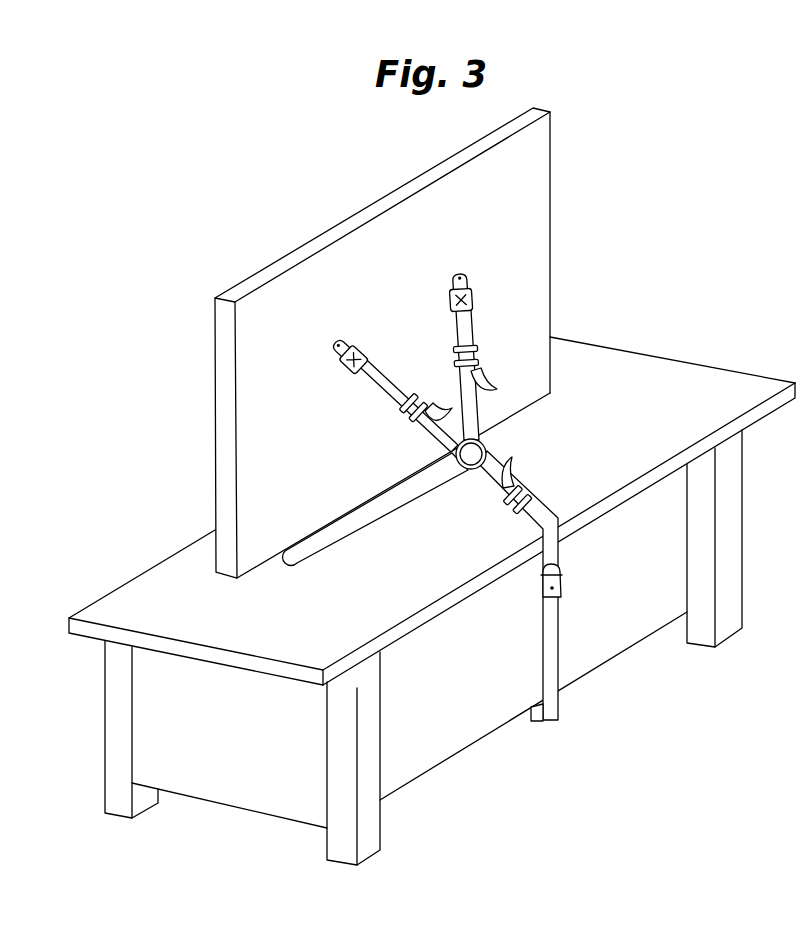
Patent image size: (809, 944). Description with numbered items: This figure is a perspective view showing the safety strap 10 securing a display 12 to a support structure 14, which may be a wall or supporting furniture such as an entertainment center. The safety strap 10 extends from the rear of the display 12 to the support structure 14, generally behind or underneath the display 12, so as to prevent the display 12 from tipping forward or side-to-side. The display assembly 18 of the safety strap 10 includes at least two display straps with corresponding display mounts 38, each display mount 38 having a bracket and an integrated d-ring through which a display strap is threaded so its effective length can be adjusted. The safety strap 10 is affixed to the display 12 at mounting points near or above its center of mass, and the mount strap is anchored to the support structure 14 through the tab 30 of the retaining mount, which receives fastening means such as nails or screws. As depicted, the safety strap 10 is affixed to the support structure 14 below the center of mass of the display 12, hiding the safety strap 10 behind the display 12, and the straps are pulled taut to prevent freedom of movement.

The safety strap 10 is at (503, 497).
The display 12 is at (551, 155).
The support structure 14 is at (543, 630).
The display assembly 18 is at (473, 308).
The tab 30 is at (563, 582).
The display mount 38 is at (337, 340).